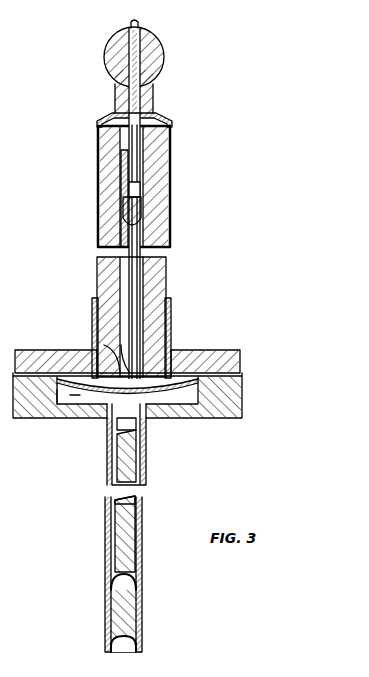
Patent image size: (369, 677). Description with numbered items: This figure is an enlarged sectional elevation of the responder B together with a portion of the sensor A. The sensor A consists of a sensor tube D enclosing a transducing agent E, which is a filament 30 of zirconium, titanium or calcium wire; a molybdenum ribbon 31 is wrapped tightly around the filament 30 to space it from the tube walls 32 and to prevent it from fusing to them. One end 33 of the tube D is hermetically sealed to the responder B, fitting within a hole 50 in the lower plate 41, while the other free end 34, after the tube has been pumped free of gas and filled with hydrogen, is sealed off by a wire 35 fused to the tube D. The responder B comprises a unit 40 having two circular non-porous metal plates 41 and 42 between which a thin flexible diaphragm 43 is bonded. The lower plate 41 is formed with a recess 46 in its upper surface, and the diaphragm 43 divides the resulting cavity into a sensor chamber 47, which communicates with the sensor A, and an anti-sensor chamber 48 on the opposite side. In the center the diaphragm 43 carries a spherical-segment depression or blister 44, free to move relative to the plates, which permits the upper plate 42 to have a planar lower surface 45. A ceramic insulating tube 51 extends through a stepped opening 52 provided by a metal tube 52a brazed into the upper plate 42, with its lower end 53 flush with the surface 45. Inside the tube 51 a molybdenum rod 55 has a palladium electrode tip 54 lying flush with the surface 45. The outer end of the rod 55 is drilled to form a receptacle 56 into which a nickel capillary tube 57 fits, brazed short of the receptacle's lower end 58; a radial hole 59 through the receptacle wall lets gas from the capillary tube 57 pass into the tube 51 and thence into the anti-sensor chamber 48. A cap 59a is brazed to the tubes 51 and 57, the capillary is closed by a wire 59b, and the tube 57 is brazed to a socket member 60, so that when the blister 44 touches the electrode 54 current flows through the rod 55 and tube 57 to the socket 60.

The filament 30 is at (137, 575).
The ribbon 31 is at (122, 548).
The tube walls 32 is at (137, 504).
The end of the tube 33 is at (150, 410).
The free end of the tube 34 is at (138, 650).
The wire 35 is at (128, 612).
The unit 40 is at (200, 346).
The lower plate 41 is at (242, 408).
The upper plate 42 is at (248, 358).
The diaphragm 43 is at (242, 380).
The blister 44 is at (105, 398).
The lower surface of the upper plate 45 is at (80, 376).
The recess 46 is at (60, 398).
The sensor chamber 47 is at (74, 396).
The anti-sensor chamber 48 is at (190, 365).
The hole 50 is at (108, 444).
The tube 51 is at (160, 272).
The stepped opening 52 is at (172, 340).
The metal tube 52a is at (94, 298).
The lower end of the tube 53 is at (104, 345).
The electrode tip 54 is at (129, 360).
The rod 55 is at (140, 288).
The receptacle 56 is at (140, 191).
The capillary tube 57 is at (156, 118).
The lower end of the receptacle 58 is at (138, 208).
The hole 59 is at (124, 195).
The cap 59a is at (172, 148).
The wire 59b is at (136, 24).
The socket member 60 is at (112, 63).
The sensor A is at (108, 536).
The responder B is at (212, 238).
The sensor tube D is at (105, 590).
The transducing agent E is at (124, 473).